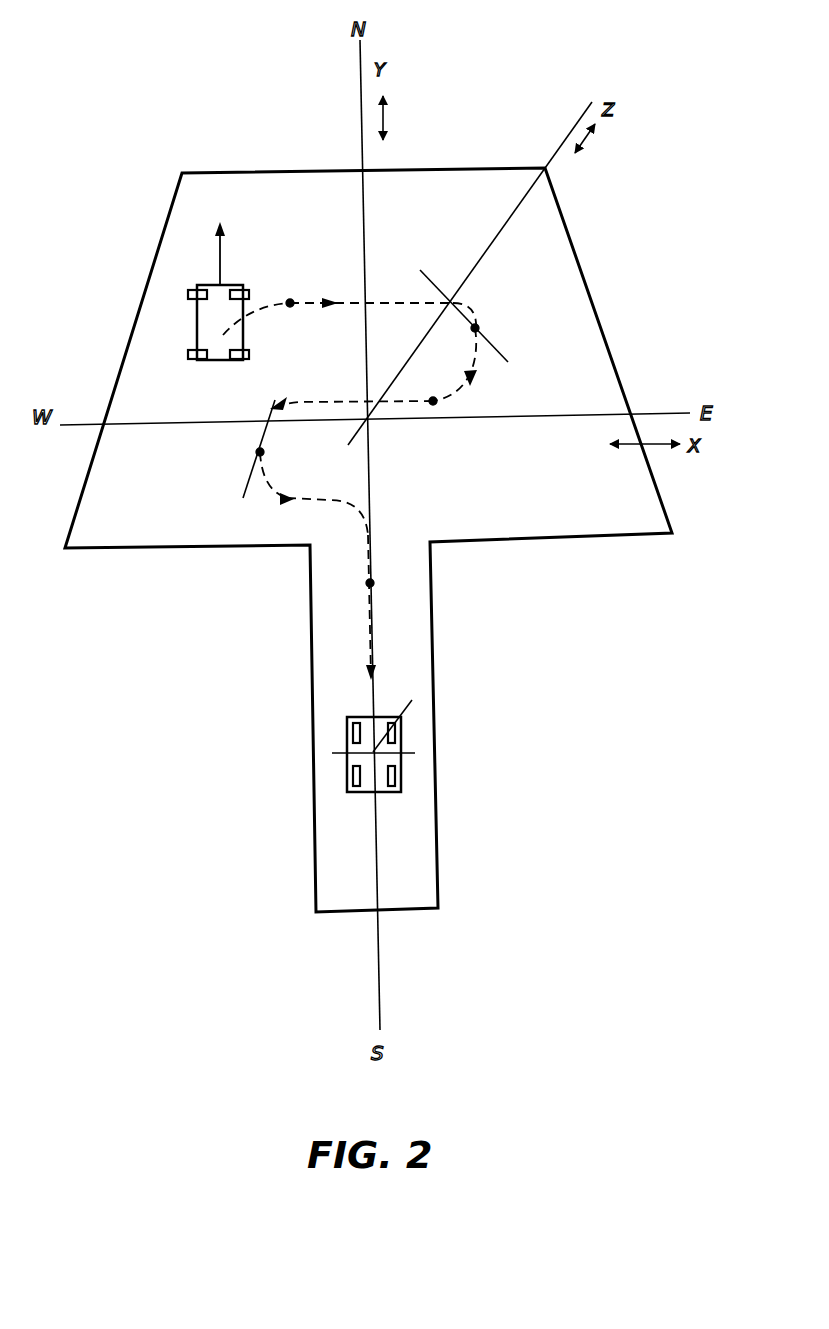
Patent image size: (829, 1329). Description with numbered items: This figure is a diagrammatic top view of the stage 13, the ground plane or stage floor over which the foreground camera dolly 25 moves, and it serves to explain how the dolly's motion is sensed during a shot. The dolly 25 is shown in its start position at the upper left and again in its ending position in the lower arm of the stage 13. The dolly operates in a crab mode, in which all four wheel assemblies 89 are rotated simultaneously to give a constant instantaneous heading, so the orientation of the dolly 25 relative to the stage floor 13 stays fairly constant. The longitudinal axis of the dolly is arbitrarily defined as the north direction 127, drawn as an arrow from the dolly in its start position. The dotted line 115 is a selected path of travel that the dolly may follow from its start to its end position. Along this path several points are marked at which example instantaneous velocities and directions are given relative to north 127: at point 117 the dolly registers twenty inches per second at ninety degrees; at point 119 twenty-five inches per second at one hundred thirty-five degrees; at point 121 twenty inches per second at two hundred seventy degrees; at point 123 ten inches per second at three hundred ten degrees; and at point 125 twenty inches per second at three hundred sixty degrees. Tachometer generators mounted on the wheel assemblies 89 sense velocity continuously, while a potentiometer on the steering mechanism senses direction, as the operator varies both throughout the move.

The stage 13 is at (545, 540).
The foreground camera dolly 25 is at (197, 318).
The wheel assemblies 89 is at (245, 290).
The path of travel 115 is at (373, 303).
The point on travel path 117 is at (290, 308).
The point on travel path 119 is at (478, 325).
The point on travel path 121 is at (438, 401).
The point on travel path 123 is at (256, 452).
The point on travel path 125 is at (367, 586).
The north direction 127 is at (222, 232).